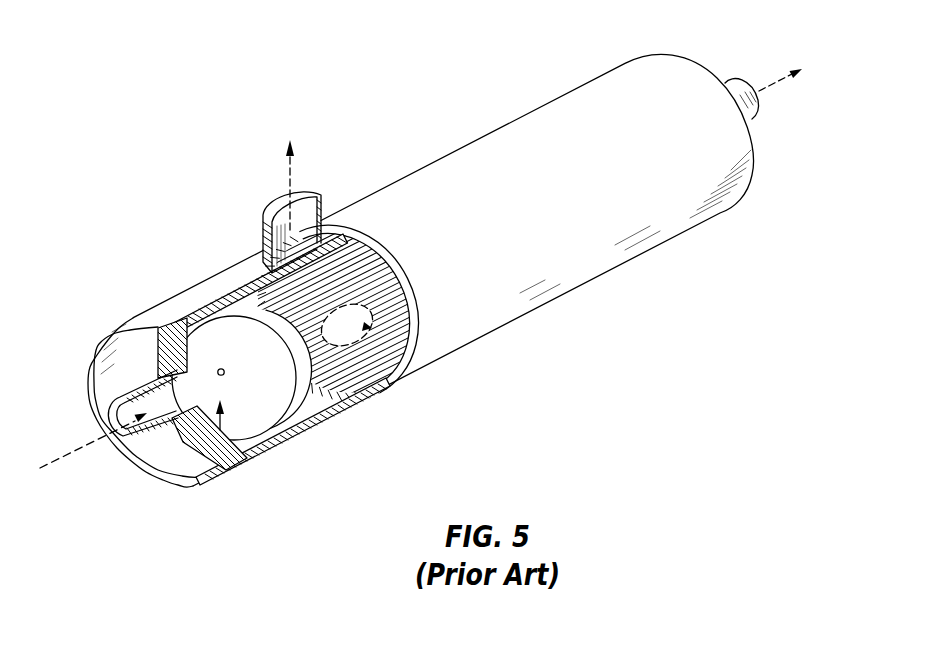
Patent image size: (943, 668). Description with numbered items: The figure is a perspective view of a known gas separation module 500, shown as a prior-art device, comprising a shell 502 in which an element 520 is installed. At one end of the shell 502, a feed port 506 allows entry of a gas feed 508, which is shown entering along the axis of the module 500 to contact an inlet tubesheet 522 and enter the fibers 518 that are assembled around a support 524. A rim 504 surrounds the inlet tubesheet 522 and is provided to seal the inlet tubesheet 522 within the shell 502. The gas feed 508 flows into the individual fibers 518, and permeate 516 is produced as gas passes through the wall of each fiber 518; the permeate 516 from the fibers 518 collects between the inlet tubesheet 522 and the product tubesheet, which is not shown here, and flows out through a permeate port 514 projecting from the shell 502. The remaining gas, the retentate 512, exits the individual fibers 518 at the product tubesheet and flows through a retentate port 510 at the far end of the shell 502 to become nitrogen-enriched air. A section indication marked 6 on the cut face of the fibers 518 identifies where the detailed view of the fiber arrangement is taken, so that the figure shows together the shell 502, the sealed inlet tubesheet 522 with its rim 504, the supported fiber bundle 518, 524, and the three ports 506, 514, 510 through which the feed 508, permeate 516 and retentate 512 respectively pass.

The gas separation module 500 is at (201, 96).
The shell 502 is at (485, 136).
The rim 504 is at (297, 397).
The feed port 506 is at (135, 430).
The gas feed 508 is at (70, 452).
The retentate port 510 is at (736, 80).
The retentate 512 is at (770, 88).
The permeate port 514 is at (322, 208).
The permeate 516 is at (288, 173).
The fibers 518 is at (353, 398).
The element 520 is at (220, 430).
The inlet tubesheet 522 is at (266, 436).
The support 524 is at (221, 366).
The section line 6 is at (393, 296).